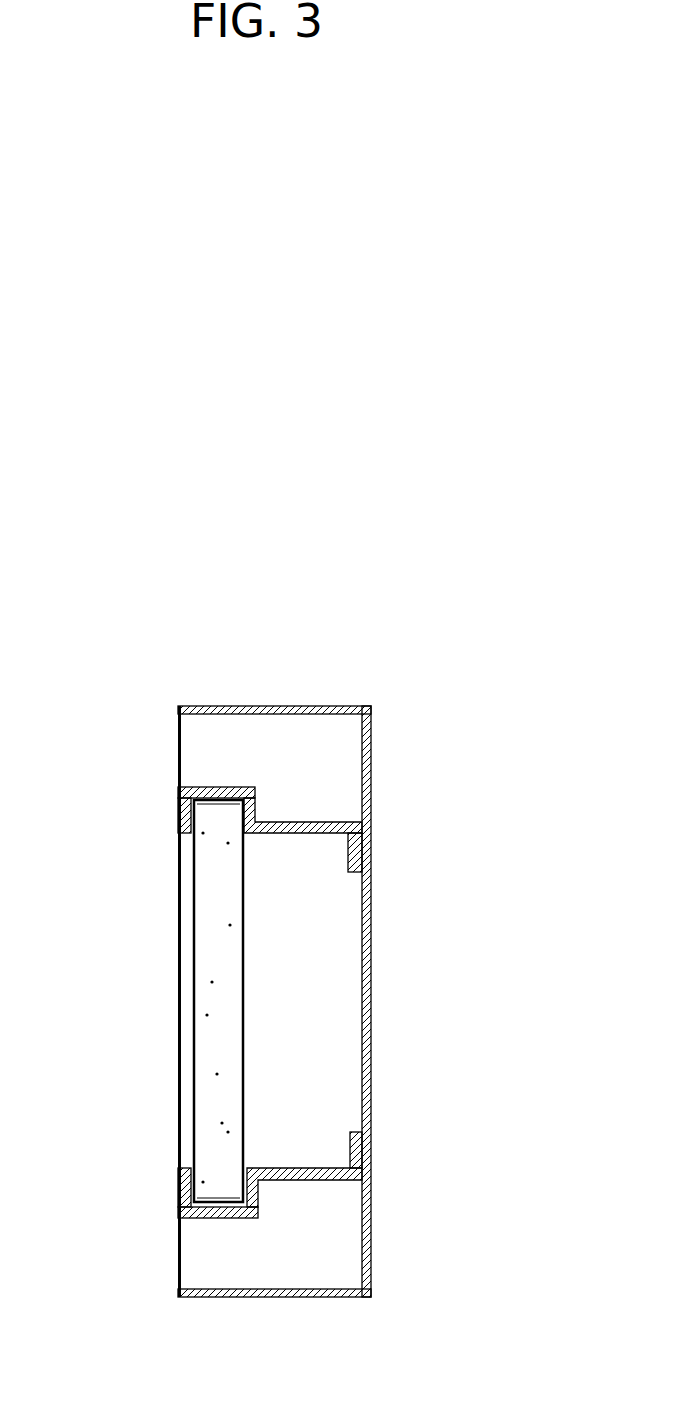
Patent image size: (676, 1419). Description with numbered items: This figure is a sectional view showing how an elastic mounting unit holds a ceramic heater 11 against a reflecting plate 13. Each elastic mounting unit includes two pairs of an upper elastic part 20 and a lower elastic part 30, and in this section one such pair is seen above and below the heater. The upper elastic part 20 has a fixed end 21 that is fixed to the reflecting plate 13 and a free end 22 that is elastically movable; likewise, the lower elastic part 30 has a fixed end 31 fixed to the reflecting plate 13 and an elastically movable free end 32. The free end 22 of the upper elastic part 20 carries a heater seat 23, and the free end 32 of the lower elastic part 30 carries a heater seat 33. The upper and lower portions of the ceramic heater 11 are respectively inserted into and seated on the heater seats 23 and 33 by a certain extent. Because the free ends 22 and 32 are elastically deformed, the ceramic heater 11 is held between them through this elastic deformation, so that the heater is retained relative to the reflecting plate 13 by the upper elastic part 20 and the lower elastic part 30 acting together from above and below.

The ceramic heater 11 is at (161, 1001).
The reflecting plate 13 is at (322, 706).
The upper elastic part 20 is at (320, 754).
The fixed end 21 is at (360, 853).
The free end 22 is at (213, 792).
The heater seat 23 is at (222, 802).
The lower elastic part 30 is at (322, 1252).
The fixed end 31 is at (366, 1150).
The free end 32 is at (215, 1218).
The heater seat 33 is at (222, 1198).